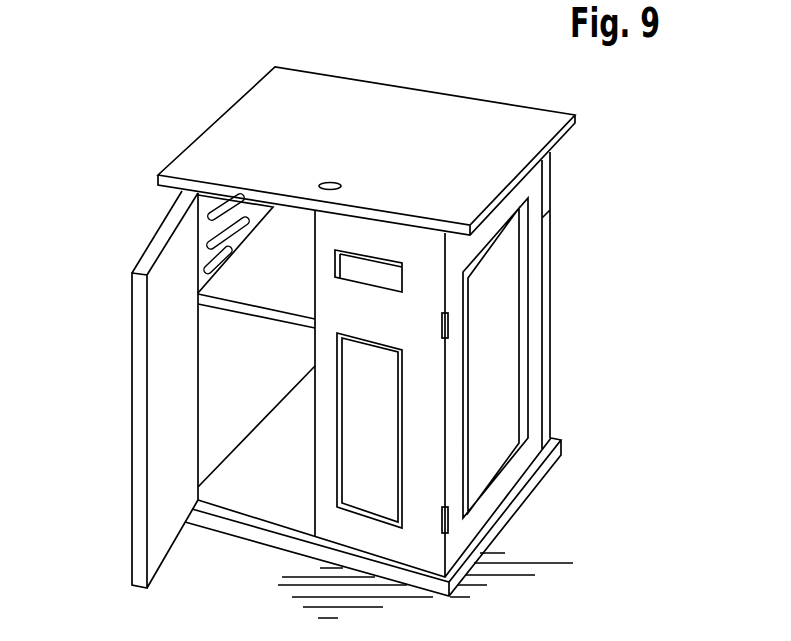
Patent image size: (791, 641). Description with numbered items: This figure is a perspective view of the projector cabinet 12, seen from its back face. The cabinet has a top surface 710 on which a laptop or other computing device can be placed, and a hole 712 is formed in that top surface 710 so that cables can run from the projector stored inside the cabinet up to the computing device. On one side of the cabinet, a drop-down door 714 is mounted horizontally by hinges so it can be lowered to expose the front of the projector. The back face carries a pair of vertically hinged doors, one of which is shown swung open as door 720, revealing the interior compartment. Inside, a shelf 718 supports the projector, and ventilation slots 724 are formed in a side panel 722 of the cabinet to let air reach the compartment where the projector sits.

The projector cabinet 12 is at (205, 104).
The top surface 710 is at (531, 137).
The hole 712 is at (333, 178).
The drop-down door 714 is at (551, 180).
The shelf 718 is at (253, 292).
The door 720 is at (158, 434).
The side panel 722 is at (220, 440).
The ventilation slots 724 is at (227, 250).